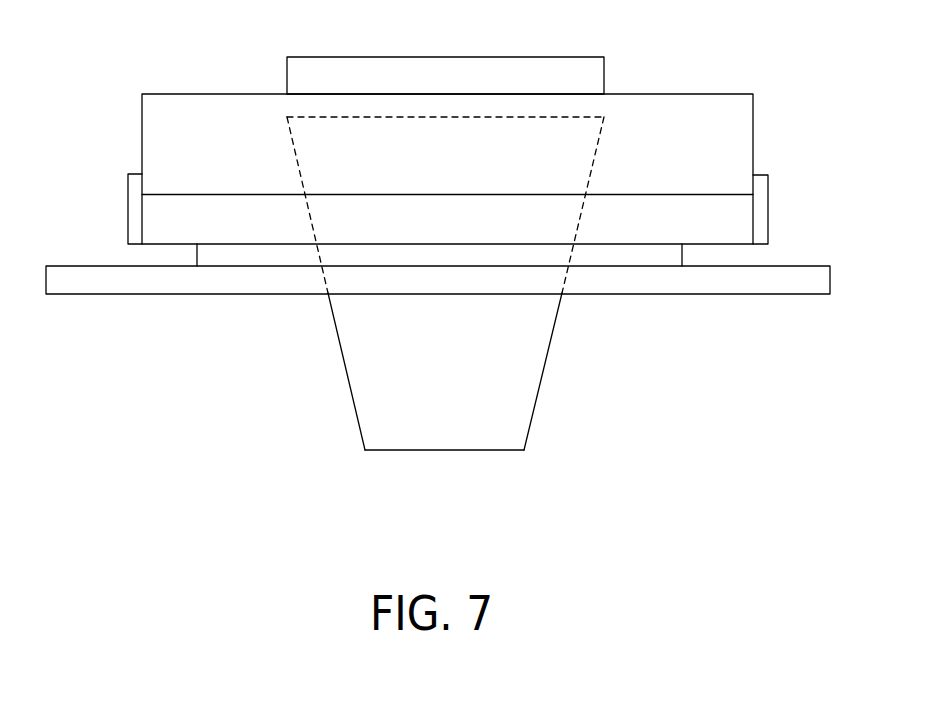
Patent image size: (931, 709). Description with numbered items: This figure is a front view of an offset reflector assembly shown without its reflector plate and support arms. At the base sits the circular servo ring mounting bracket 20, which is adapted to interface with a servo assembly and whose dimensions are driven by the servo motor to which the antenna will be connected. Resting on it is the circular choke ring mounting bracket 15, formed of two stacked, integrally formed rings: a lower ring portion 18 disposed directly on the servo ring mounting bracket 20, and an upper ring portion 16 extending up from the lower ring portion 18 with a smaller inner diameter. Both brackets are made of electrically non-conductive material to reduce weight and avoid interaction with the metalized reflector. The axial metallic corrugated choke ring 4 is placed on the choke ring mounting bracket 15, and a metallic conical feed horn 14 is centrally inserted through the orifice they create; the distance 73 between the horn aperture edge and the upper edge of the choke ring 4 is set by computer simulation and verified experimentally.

The axial metallic corrugated choke ring 4 is at (703, 90).
The top layer thickness 73 is at (450, 92).
The metallic conical feed horn 14 is at (432, 375).
The circular choke ring mounting bracket 15 is at (668, 251).
The upper ring portion 16 is at (232, 213).
The lower ring portion 18 is at (593, 253).
The circular servo ring mounting bracket 20 is at (623, 283).